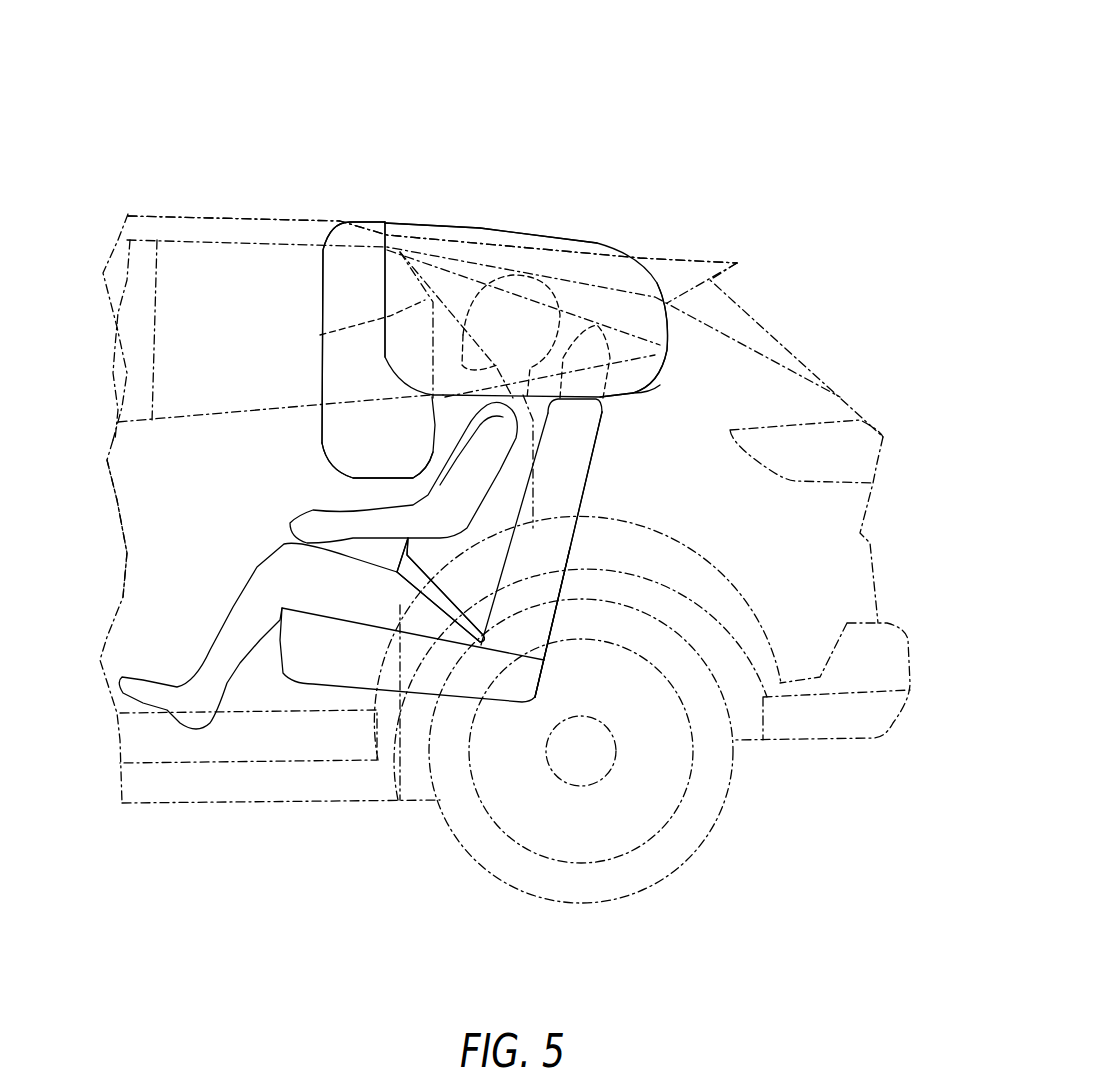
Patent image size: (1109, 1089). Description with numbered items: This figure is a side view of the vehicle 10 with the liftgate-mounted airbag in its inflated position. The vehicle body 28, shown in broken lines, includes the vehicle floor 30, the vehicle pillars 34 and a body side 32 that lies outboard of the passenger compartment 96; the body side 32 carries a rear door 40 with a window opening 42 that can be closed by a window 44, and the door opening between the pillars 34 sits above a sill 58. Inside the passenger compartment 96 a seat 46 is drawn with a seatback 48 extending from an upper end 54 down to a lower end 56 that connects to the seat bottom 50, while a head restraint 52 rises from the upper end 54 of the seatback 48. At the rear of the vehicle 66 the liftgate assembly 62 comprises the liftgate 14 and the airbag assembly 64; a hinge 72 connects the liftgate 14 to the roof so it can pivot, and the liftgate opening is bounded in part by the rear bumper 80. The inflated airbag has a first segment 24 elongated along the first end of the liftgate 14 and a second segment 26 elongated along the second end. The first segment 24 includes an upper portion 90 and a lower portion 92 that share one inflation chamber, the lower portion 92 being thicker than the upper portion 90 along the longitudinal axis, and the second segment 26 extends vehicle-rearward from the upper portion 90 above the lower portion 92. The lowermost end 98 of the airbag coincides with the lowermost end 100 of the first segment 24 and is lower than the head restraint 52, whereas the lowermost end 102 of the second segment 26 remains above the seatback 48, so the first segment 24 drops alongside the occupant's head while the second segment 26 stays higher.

The vehicle 10 is at (203, 80).
The liftgate 14 is at (840, 397).
The first segment 24 is at (323, 433).
The second segment 26 is at (602, 244).
The vehicle body 28 is at (110, 224).
The vehicle floor 30 is at (127, 735).
The body side 32 is at (159, 575).
The vehicle pillars 34 is at (320, 335).
The rear door 40 is at (190, 522).
The window opening 42 is at (260, 260).
The window 44 is at (203, 260).
The seat 46 is at (592, 455).
The seatback 48 is at (580, 487).
The seat bottom 50 is at (318, 684).
The head restraint 52 is at (660, 368).
The upper end 54 is at (600, 427).
The lower end 56 is at (562, 568).
The sill 58 is at (178, 767).
The liftgate assembly 62 is at (790, 340).
The airbag assembly 64 is at (495, 222).
The rear of the vehicle 66 is at (887, 537).
The hinge 72 is at (390, 222).
The rear bumper 80 is at (915, 673).
The upper portion 90 is at (320, 285).
The lower portion 92 is at (360, 475).
The passenger compartment 96 is at (159, 450).
The lowermost end of the airbag 98 is at (384, 500).
The lowermost end of the first segment 100 is at (384, 500).
The lowermost end of the second segment 102 is at (627, 403).